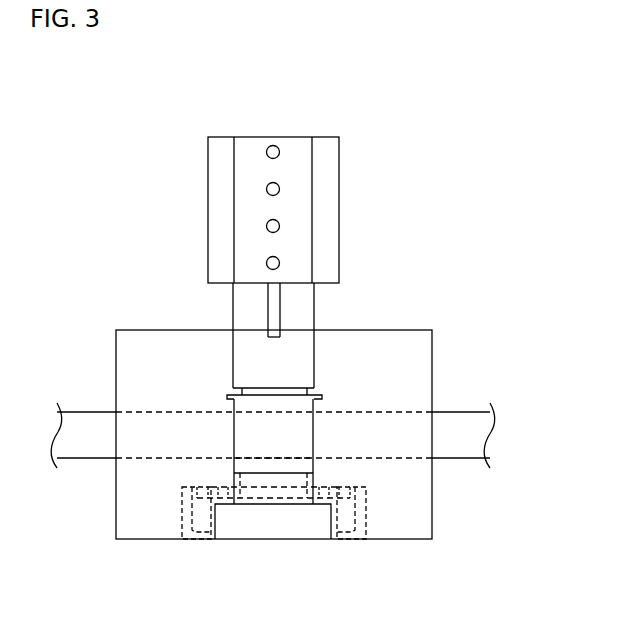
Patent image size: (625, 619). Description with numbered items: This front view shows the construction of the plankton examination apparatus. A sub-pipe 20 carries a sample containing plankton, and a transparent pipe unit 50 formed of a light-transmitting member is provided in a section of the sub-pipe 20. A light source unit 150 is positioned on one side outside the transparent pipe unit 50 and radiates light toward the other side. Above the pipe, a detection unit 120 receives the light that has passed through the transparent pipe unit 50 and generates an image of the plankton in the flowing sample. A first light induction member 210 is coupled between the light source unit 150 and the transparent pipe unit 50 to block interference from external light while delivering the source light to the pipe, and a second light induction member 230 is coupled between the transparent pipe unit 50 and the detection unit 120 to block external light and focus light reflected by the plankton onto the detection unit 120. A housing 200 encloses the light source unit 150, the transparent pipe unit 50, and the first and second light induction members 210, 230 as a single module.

The detection unit 120 is at (267, 137).
The housing 200 is at (135, 330).
The sub-pipe 20 is at (85, 423).
The second light induction member 230 is at (314, 359).
The transparent pipe unit 50 is at (275, 458).
The first light induction member 210 is at (313, 482).
The light source unit 150 is at (273, 540).